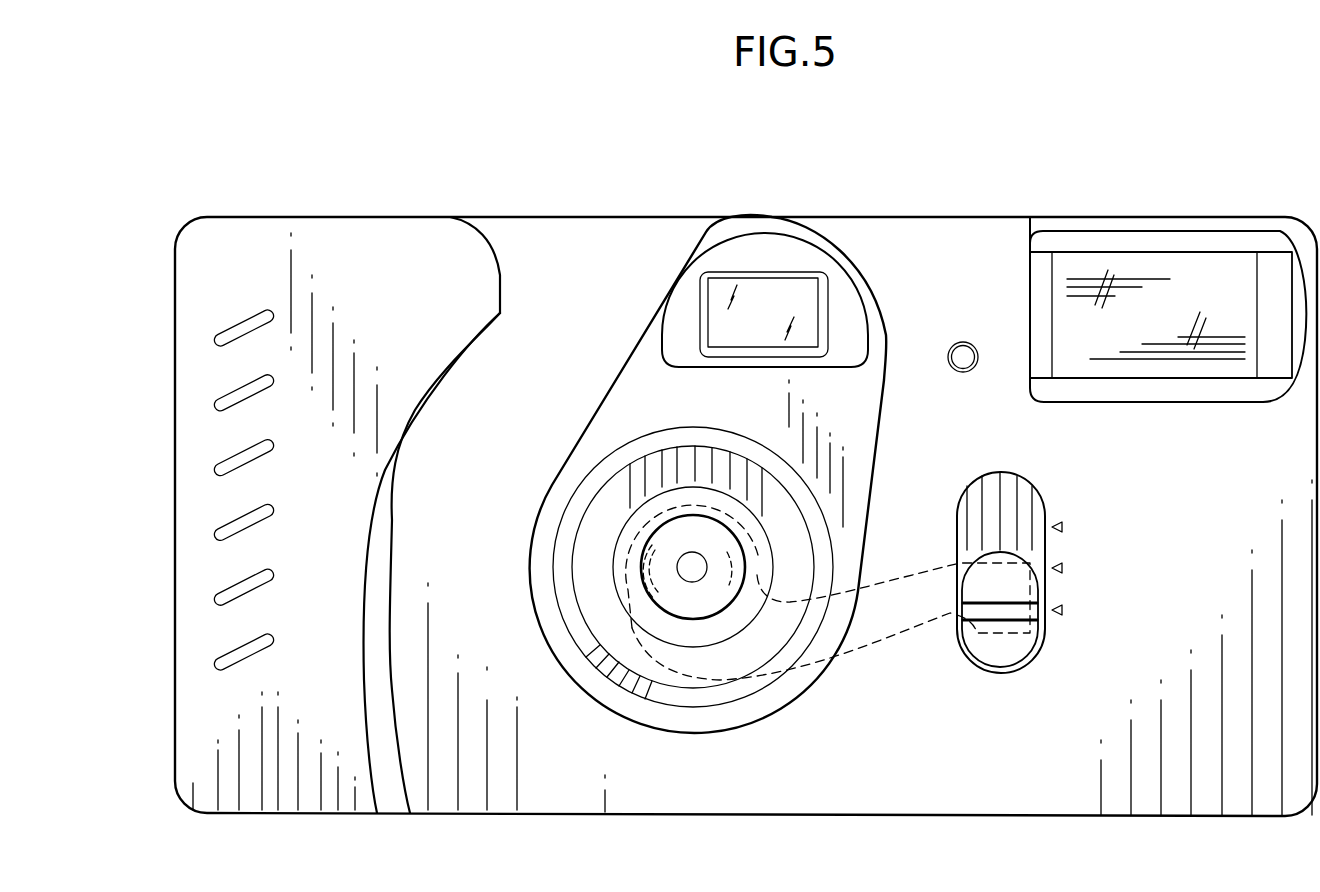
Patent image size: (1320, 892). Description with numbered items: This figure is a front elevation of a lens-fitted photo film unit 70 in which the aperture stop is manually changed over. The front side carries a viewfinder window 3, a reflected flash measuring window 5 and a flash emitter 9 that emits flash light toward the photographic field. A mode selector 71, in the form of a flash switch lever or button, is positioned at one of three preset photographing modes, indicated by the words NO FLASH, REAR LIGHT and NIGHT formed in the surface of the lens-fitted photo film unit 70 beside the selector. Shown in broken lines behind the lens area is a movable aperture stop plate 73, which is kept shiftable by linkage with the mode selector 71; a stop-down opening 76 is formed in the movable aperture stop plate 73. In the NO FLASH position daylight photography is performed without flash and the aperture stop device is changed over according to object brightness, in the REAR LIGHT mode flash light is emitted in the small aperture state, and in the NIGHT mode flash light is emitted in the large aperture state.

The lens-fitted photo film unit 70 is at (330, 214).
The viewfinder window 3 is at (768, 298).
The reflected flash measuring window 5 is at (963, 341).
The flash emitter 9 is at (1167, 300).
The stop-down opening 76 is at (692, 583).
The movable aperture stop plate 73 is at (887, 625).
The mode selector 71 is at (1003, 612).